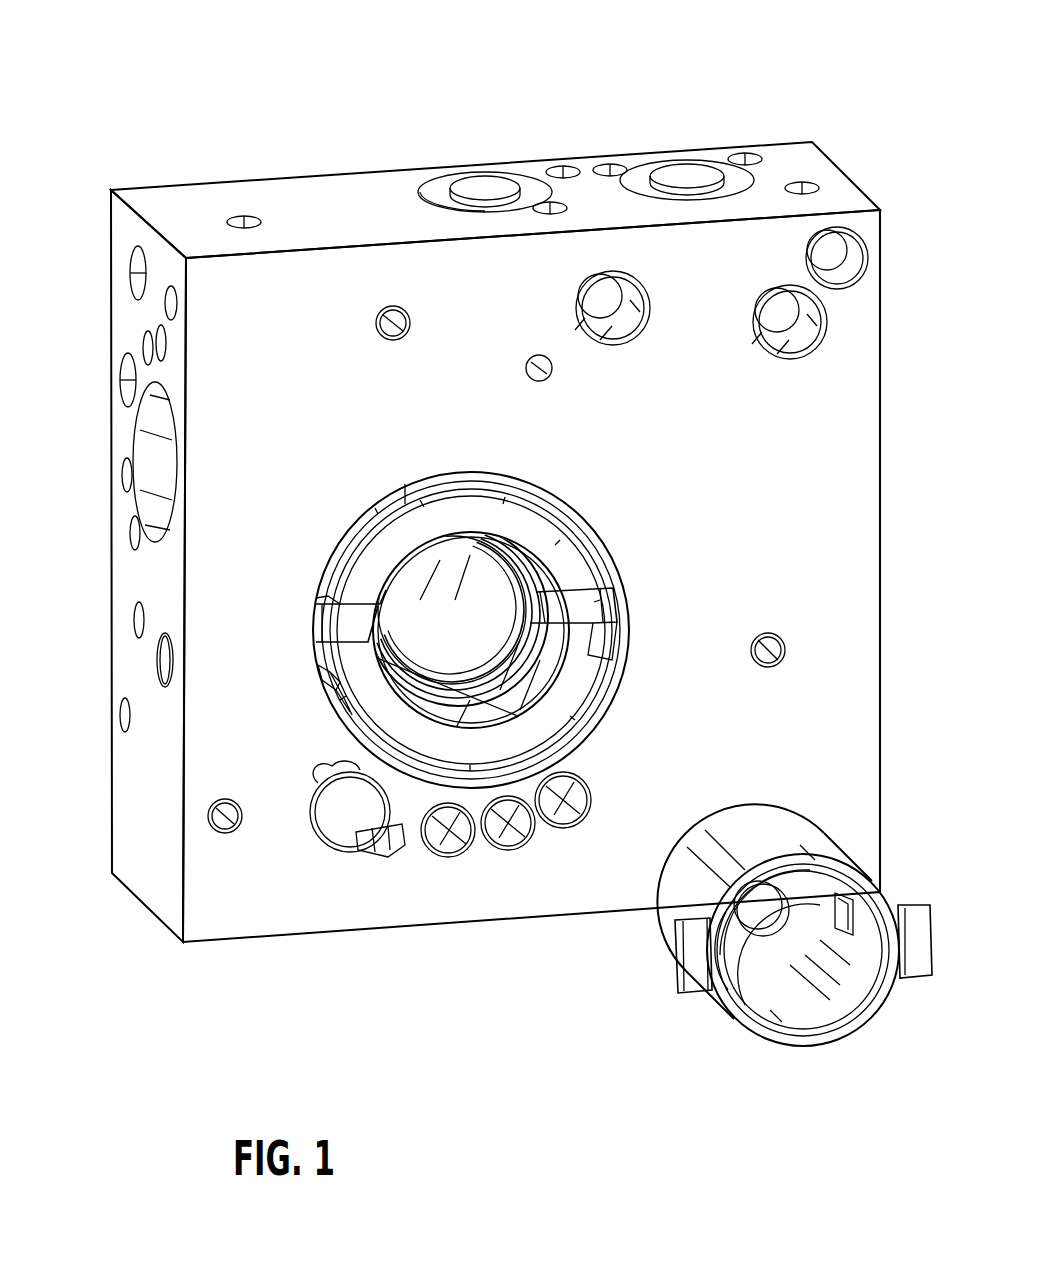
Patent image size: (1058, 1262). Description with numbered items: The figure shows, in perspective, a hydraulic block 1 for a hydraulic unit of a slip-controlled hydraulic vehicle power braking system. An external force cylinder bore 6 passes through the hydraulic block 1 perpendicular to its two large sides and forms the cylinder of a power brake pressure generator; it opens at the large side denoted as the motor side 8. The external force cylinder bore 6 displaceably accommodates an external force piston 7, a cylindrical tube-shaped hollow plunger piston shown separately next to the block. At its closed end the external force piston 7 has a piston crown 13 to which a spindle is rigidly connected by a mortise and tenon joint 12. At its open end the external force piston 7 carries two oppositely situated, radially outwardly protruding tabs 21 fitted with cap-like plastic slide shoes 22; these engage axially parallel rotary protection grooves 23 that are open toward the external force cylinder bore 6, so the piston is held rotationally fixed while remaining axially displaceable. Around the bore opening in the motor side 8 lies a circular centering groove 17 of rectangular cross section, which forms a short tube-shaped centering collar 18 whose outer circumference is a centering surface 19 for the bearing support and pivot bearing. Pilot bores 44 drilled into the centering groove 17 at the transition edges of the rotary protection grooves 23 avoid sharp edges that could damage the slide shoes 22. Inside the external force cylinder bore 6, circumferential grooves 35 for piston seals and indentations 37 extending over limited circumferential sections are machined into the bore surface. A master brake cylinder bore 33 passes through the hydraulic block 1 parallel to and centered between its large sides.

The hydraulic block 1 is at (282, 80).
The external force cylinder bore 6 is at (524, 661).
The external force piston 7 is at (765, 835).
The motor side 8 is at (812, 443).
The mortise and tenon joint 12 is at (765, 913).
The piston crown 13 is at (792, 933).
The centering groove 17 is at (573, 515).
The centering collar 18 is at (567, 553).
The centering surface 19 is at (403, 503).
The tabs 21 is at (900, 973).
The slide shoes 22 is at (920, 948).
The rotary protection grooves 23 is at (593, 630).
The master brake cylinder bore 33 is at (150, 482).
The circumferential grooves 35 is at (448, 643).
The indentations 37 is at (497, 657).
The pilot bores 44 is at (315, 667).